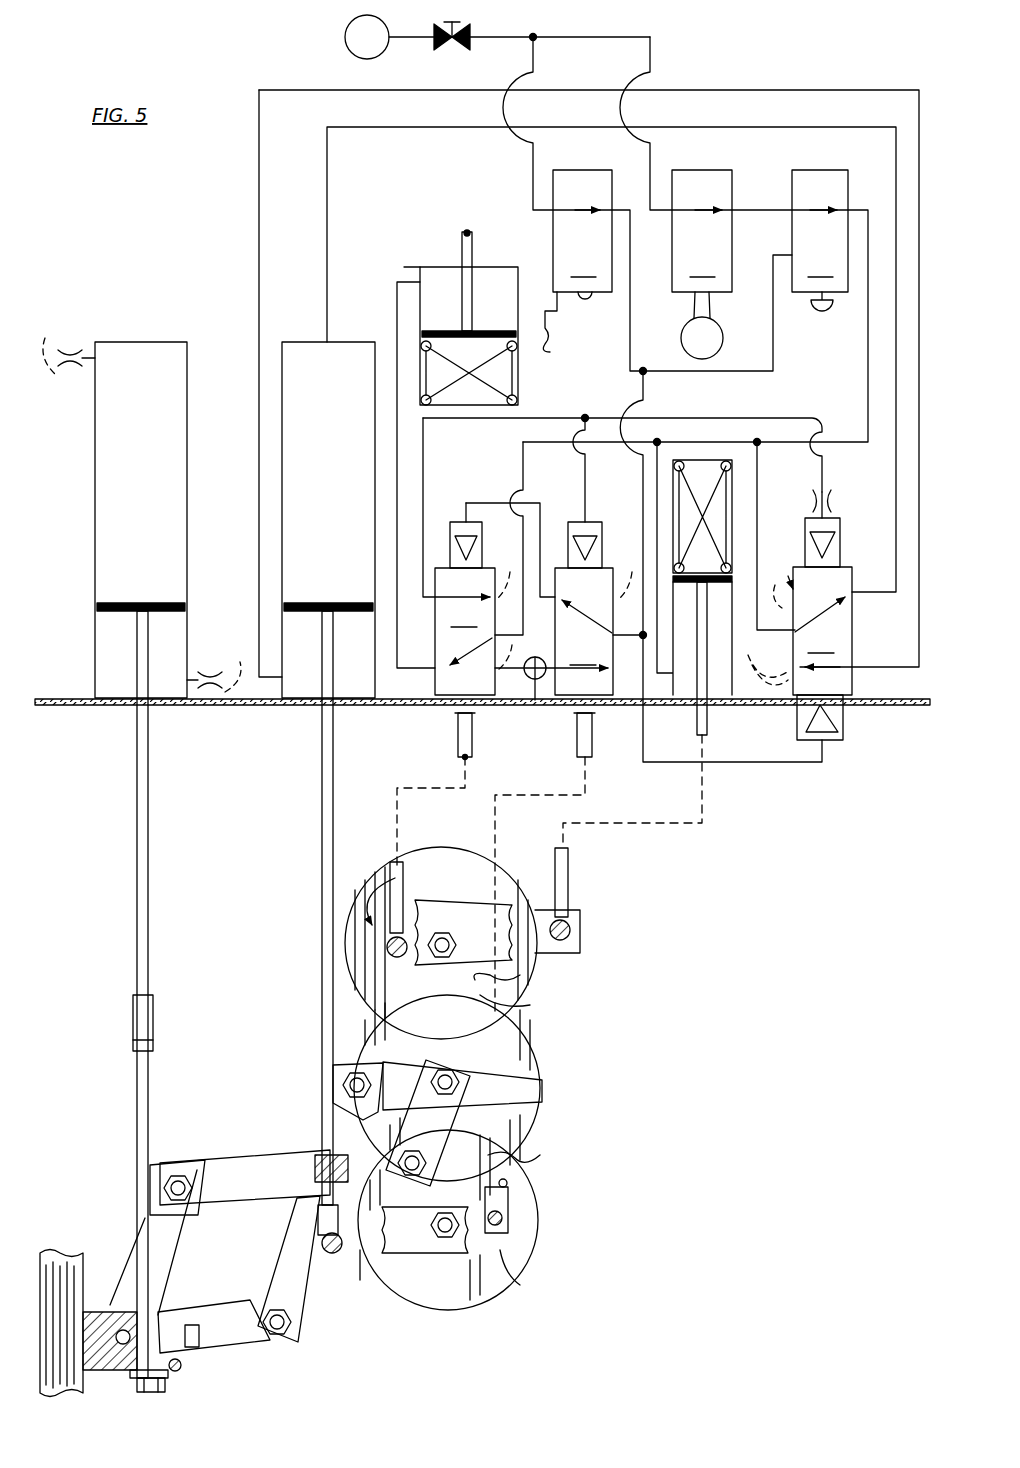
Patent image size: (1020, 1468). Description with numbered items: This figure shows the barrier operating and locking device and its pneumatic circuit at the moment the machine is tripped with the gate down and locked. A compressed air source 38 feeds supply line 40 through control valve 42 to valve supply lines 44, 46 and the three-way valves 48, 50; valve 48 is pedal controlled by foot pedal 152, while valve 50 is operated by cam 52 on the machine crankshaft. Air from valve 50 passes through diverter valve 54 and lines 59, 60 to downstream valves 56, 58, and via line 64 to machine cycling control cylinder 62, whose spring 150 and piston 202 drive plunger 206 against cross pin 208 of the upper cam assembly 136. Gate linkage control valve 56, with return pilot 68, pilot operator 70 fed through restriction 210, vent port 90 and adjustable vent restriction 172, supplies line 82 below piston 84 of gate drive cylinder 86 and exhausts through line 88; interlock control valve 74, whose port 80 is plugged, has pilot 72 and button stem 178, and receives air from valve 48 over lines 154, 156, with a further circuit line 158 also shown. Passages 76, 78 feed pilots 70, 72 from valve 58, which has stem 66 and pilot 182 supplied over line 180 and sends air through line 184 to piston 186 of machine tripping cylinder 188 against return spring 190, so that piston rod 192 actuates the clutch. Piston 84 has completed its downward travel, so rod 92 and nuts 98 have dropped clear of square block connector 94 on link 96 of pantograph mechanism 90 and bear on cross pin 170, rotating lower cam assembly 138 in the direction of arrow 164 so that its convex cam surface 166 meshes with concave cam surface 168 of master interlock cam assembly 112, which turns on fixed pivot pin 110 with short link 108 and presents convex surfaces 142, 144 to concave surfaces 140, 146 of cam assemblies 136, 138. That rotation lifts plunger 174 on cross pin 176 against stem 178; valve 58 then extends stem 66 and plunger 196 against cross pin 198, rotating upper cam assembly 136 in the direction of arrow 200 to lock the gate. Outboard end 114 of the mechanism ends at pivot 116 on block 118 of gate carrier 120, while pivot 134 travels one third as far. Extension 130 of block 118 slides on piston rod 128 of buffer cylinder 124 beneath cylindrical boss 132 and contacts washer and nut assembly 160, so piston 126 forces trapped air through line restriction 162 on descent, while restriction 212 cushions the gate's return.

The compressed air source 38 is at (346, 43).
The supply line 40 is at (595, 34).
The control valve 42 is at (447, 45).
The valve supply line 44 is at (533, 62).
The valve supply line 46 is at (650, 48).
The pedal controlled valve 48 is at (582, 234).
The cam operated valve 50 is at (702, 231).
The cam 52 is at (716, 335).
The diverter valve 54 is at (820, 240).
The gate linkage control valve 56 is at (822, 631).
The machine cycling control valve 58 is at (473, 631).
The line 59 is at (868, 378).
The line 60 is at (746, 462).
The machine cycling control cylinder 62 is at (740, 700).
The line 64 is at (651, 528).
The valve stem 66 is at (456, 716).
The return pilot 68 is at (843, 722).
The pilot operator 70 is at (840, 520).
The pilot 72 is at (575, 524).
The interlock control valve 74 is at (593, 631).
The passage 76 is at (548, 412).
The passage 78 is at (585, 490).
The port 80 is at (542, 700).
The line 82 is at (919, 497).
The piston 84 is at (338, 600).
The gate drive cylinder 86 is at (345, 322).
The line 88 is at (403, 128).
The pantograph mechanism 90 is at (790, 560).
The piston rod 92 is at (344, 790).
The square block connector 94 is at (320, 1130).
The link 96 is at (250, 1160).
The nuts 98 is at (300, 1230).
The short link 108 is at (470, 1090).
The fixed pivot pin 110 is at (538, 1048).
The master interlock cam assembly 112 is at (372, 1032).
The outboard end 114 is at (190, 1312).
The pivot 116 is at (130, 1380).
The block 118 is at (118, 1305).
The carrier 120 is at (70, 1270).
The buffer cylinder 124 is at (192, 548).
The piston 126 is at (118, 602).
The piston rod 128 is at (137, 652).
The extension 130 is at (199, 1330).
The cylindrical boss 132 is at (153, 1002).
The pivot 134 is at (315, 1125).
The upper cam assembly 136 is at (445, 884).
The lower cam assembly 138 is at (540, 1232).
The concave cam surfaces 140 is at (520, 982).
The upper convex cam surfaces 142 is at (520, 1010).
The lower convex cam surfaces 144 is at (540, 1132).
The concave cam surface 146 is at (470, 1290).
The spring 150 is at (733, 498).
The foot pedal 152 is at (542, 328).
The line 154 is at (622, 310).
The line 156 is at (773, 345).
The line 158 is at (680, 410).
The buffer washer and nut assembly 160 is at (176, 1358).
The line restriction 162 is at (208, 672).
The arrow 164 is at (380, 1292).
The convex cam surface 166 is at (540, 1252).
The concave cam surface 168 is at (532, 1153).
The cross pin 170 is at (322, 1255).
The vent line restriction 172 is at (786, 683).
The connecting plunger 174 is at (536, 1172).
The cross pin 176 is at (490, 1280).
The valve button actuator 178 is at (594, 720).
The line 180 is at (515, 476).
The pilot 182 is at (452, 522).
The line 184 is at (397, 298).
The piston 186 is at (500, 330).
The machine tripping cylinder 188 is at (403, 256).
The internal return spring 190 is at (490, 373).
The piston rod 192 is at (468, 230).
The connecting plunger 196 is at (470, 765).
The cross pin 198 is at (390, 868).
The arrow 200 is at (416, 895).
The piston 202 is at (767, 660).
The plunger 206 is at (570, 878).
The cross pin 208 is at (570, 928).
The restriction 210 is at (830, 492).
The buffer cylinder line restriction 212 is at (88, 325).